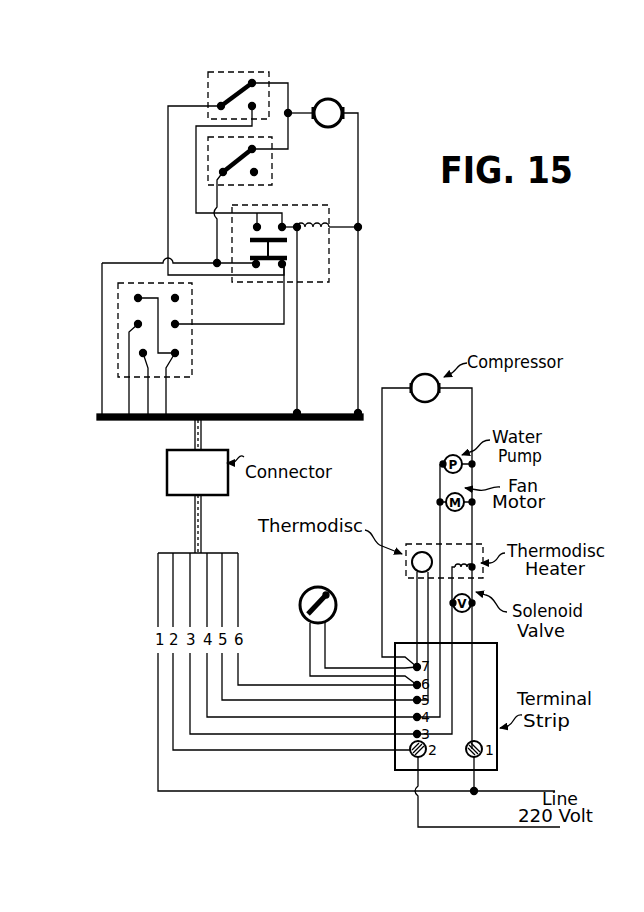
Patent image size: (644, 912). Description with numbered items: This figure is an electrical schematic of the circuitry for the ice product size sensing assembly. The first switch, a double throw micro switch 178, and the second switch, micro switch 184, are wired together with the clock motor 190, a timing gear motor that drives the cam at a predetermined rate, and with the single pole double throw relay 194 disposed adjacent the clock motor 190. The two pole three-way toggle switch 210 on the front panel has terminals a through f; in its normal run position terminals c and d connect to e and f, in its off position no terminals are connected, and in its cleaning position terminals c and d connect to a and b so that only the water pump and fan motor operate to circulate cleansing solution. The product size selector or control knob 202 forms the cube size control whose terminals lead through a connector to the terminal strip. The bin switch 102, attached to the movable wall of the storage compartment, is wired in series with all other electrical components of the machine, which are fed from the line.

The double throw micro switch 178 is at (330, 59).
The micro switch 184 is at (203, 163).
The clock motor 190 is at (347, 103).
The single pole double throw relay 194 is at (333, 257).
The toggle switch 210 is at (114, 322).
The control knob 202 is at (145, 426).
The bin switch 102 is at (350, 587).